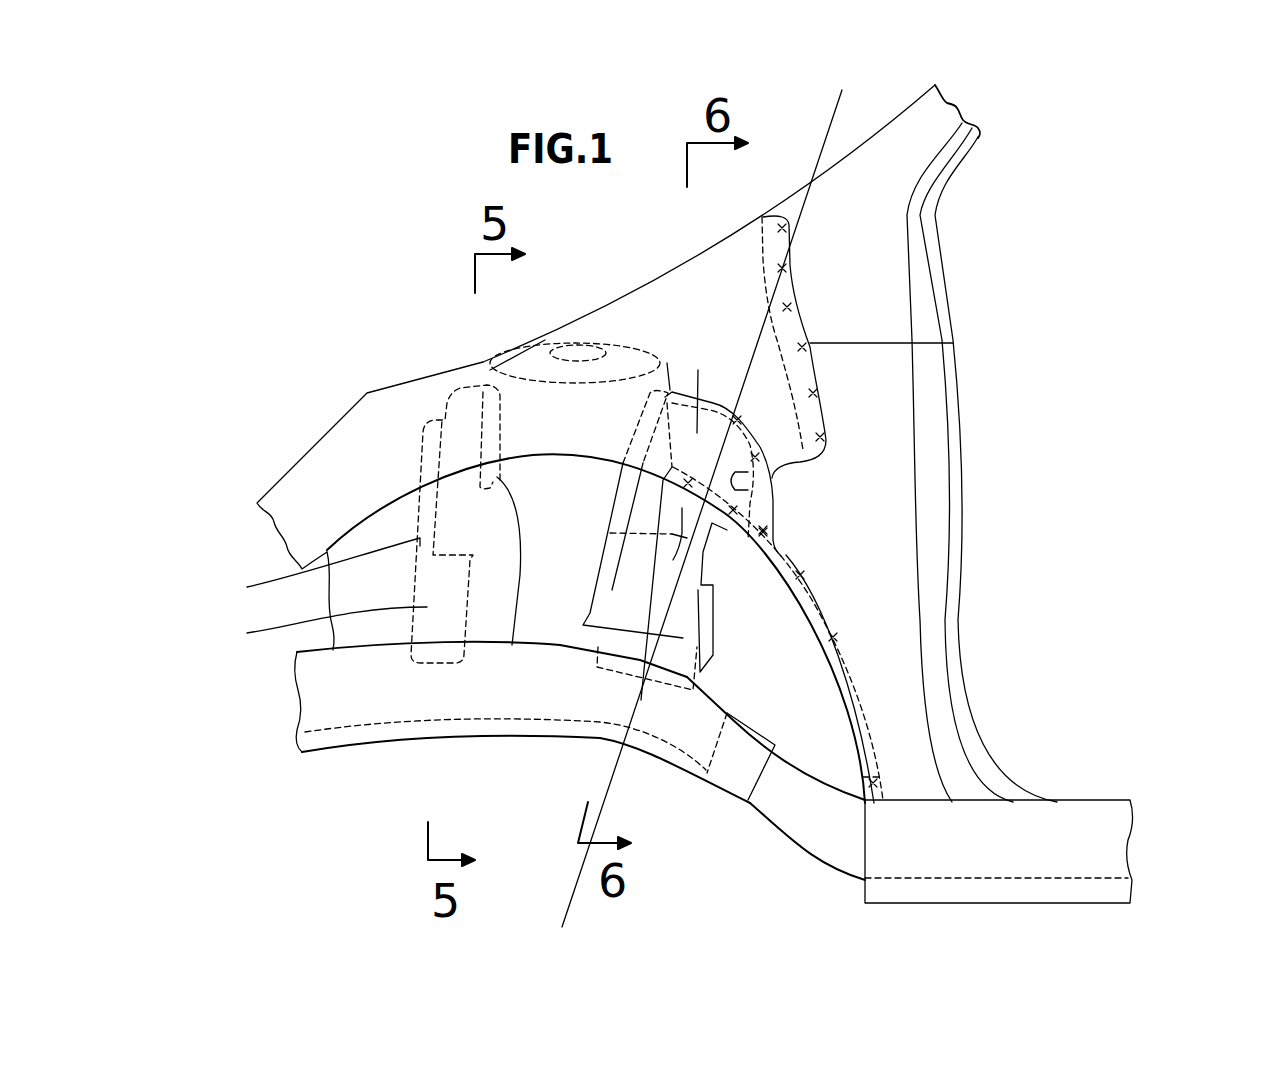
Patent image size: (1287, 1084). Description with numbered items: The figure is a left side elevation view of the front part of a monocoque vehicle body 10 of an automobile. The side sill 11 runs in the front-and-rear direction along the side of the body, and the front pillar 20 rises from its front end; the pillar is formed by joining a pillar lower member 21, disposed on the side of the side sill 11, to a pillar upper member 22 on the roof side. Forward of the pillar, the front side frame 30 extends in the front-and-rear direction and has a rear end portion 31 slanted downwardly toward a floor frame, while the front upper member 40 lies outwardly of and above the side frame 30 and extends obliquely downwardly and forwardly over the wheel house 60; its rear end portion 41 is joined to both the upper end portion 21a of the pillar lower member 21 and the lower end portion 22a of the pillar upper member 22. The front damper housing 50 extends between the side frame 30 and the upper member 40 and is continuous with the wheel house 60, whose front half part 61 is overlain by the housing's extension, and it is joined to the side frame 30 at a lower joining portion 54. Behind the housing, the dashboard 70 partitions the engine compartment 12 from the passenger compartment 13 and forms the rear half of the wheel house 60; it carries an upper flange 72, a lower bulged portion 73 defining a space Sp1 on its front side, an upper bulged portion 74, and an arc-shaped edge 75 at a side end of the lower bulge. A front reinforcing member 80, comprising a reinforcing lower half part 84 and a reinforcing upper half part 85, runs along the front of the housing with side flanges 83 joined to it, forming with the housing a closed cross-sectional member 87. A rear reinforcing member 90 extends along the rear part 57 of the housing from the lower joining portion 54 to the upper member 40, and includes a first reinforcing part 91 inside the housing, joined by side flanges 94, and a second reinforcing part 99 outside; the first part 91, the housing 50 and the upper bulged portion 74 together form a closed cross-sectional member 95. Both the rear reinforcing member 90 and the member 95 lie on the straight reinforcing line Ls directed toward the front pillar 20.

The vehicle body 10 is at (1106, 170).
The side sill 11 is at (1117, 851).
The engine compartment 12 is at (107, 503).
The passenger compartment 13 is at (1214, 569).
The front pillar 20 is at (1153, 215).
The pillar lower member 21 is at (970, 443).
The upper end portion of pillar lower member 21a is at (897, 388).
The pillar upper member 22 is at (945, 238).
The lower end portion of pillar upper member 22a is at (892, 296).
The front side frame 30 is at (333, 753).
The rear end portion of side frame 31 is at (777, 817).
The front upper member 40 is at (280, 477).
The rear end portion of upper member 41 is at (727, 277).
The front damper housing 50 is at (485, 367).
The lower joining portion 54 is at (663, 680).
The rear part of damper housing 57 is at (697, 433).
The wheel house 60 is at (383, 523).
The front half part of wheel house 61 is at (351, 545).
The dashboard 70 is at (825, 623).
The upper flange 72 is at (667, 363).
The lower bulged portion 73 is at (787, 612).
The upper bulged portion 74 is at (745, 494).
The arc-shaped edge 75 is at (790, 545).
The front reinforcing member 80 is at (187, 570).
The side flange of front reinforcing member 83 is at (405, 630).
The reinforcing lower half part 84 is at (247, 633).
The reinforcing upper half part 85 is at (247, 587).
The closed cross-sectional member 87 is at (465, 437).
The rear reinforcing member 90 is at (1083, 632).
The first reinforcing part 91 is at (700, 608).
The side flange of first reinforcing part 94 is at (587, 573).
The closed cross-sectional member 95 is at (698, 370).
The second reinforcing part 99 is at (700, 648).
The reinforcing line Ls is at (832, 122).
The space Sp1 is at (805, 727).